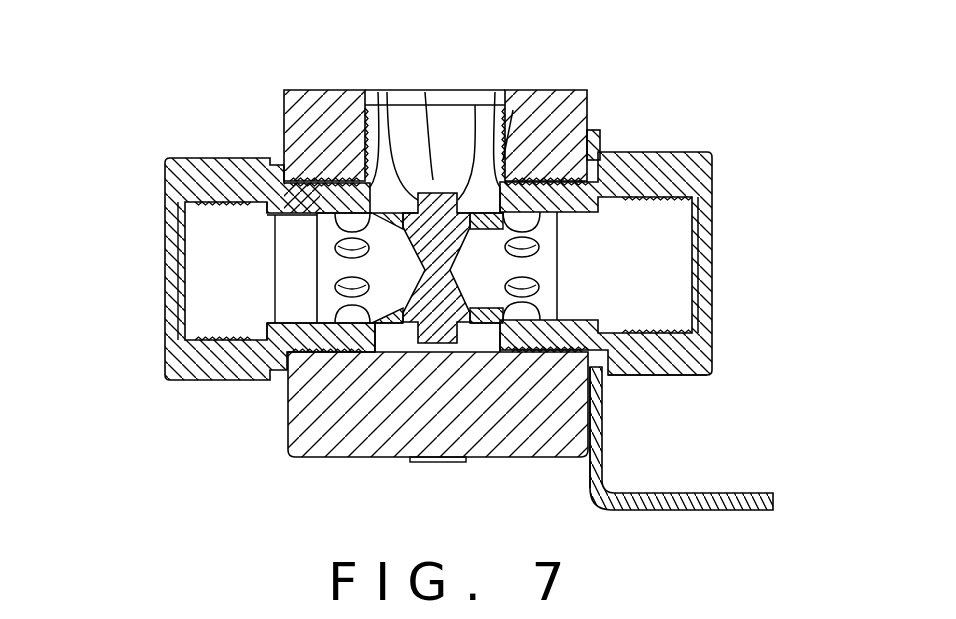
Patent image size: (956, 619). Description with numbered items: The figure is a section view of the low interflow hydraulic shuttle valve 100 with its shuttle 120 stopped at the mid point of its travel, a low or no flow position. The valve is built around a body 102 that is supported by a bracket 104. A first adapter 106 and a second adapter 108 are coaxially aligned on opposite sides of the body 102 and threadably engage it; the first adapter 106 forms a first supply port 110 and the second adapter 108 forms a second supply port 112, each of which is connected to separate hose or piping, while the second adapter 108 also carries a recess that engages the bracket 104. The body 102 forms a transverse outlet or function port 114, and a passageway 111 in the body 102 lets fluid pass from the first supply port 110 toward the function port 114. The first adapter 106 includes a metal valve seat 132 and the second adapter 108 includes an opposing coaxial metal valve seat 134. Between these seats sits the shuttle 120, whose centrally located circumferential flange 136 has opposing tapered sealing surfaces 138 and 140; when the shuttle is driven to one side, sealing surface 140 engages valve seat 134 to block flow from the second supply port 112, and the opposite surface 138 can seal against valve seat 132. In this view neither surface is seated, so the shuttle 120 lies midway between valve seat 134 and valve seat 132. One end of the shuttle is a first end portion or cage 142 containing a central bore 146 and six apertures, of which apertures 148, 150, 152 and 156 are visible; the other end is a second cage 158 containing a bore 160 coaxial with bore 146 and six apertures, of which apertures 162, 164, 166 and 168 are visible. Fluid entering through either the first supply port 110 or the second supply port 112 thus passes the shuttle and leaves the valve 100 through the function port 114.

The shuttle valve 100 is at (203, 71).
The body 102 is at (288, 426).
The bracket 104 is at (775, 496).
The first adapter 106 is at (175, 175).
The second adapter 108 is at (712, 172).
The first supply port 110 is at (336, 318).
The passageway 111 is at (482, 330).
The second supply port 112 is at (668, 330).
The function port 114 is at (373, 108).
The shuttle 120 is at (438, 272).
The metal valve seat 132 is at (398, 198).
The metal valve seat 134 is at (513, 110).
The circumferential flange 136 is at (425, 92).
The tapered sealing surface 138 is at (385, 92).
The tapered sealing surface 140 is at (473, 105).
The first end portion or cage 142 is at (345, 222).
The central bore 146 is at (340, 250).
The aperture 148 is at (330, 185).
The aperture 150 is at (343, 279).
The aperture 152 is at (340, 300).
The aperture 156 is at (357, 317).
The end portion or cage 158 is at (555, 225).
The bore 160 is at (545, 247).
The aperture 162 is at (600, 128).
The aperture 164 is at (545, 275).
The aperture 166 is at (660, 377).
The aperture 168 is at (601, 424).